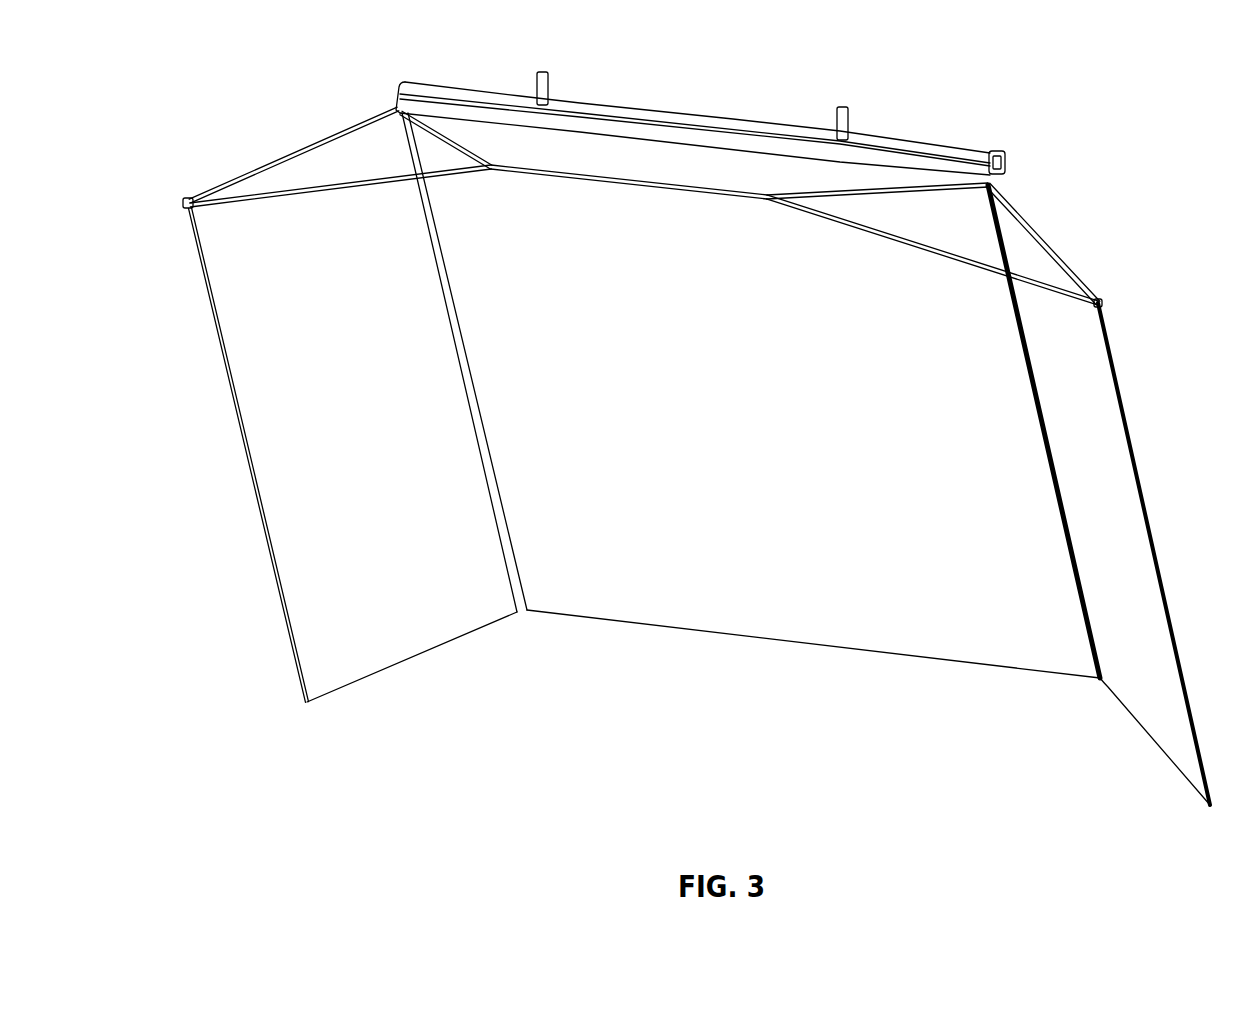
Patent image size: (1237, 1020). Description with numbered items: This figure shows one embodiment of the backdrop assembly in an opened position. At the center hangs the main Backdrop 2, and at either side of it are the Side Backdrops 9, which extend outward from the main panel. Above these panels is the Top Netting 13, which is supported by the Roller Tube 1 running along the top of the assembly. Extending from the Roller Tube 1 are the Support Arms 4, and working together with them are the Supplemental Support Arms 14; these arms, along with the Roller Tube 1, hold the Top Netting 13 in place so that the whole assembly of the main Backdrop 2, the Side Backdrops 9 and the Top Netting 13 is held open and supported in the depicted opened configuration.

The Roller Tube 1 is at (560, 108).
The Top Netting 13 is at (672, 160).
The Supplemental Support Arms 14 is at (905, 190).
The Support Arms 4 is at (1047, 240).
The main Backdrop 2 is at (798, 605).
The Side Backdrops 9 is at (1093, 478).